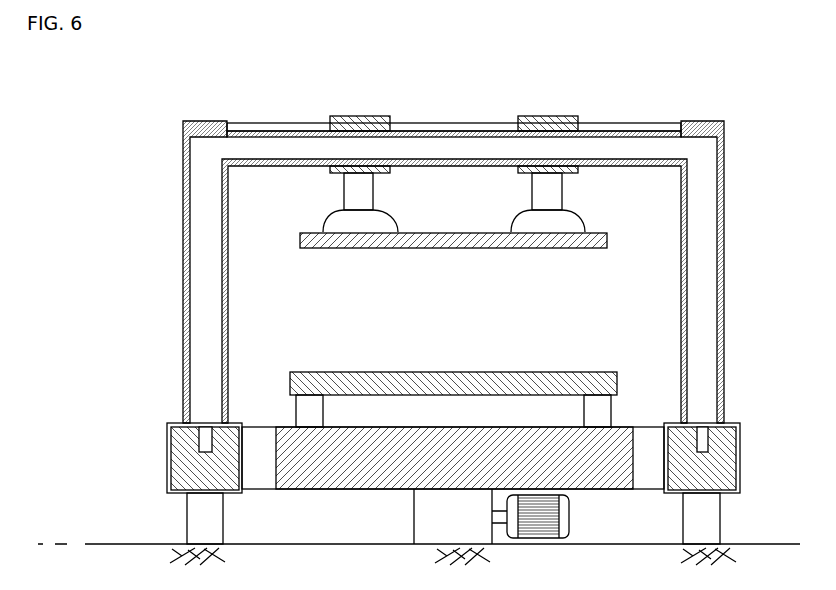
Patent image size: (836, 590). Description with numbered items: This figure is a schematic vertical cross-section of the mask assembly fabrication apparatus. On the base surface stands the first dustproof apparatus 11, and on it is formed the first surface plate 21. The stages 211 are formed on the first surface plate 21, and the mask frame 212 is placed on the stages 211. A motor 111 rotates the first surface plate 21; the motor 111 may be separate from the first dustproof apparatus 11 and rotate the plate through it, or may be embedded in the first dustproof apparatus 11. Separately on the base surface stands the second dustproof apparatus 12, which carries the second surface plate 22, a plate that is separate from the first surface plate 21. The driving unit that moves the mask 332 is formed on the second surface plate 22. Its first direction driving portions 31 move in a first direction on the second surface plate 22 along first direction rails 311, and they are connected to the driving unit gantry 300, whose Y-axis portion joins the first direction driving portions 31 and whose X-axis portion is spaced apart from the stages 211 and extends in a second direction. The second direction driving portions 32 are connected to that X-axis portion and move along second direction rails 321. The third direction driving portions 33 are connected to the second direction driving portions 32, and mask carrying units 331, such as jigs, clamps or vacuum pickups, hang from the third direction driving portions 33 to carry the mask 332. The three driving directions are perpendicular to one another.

The driving unit gantry 300 is at (722, 177).
The second direction rails 321 is at (445, 127).
The second direction driving portions 32 is at (353, 122).
The third direction driving portions 33 is at (358, 195).
The mask carrying units 331 is at (348, 220).
The mask 332 is at (357, 245).
The mask frame 212 is at (503, 377).
The stages 211 is at (593, 412).
The first surface plate 21 is at (328, 470).
The second surface plate 22 is at (197, 465).
The first direction driving portions 31 is at (739, 450).
The first direction rails 311 is at (705, 452).
The first dustproof apparatus 11 is at (425, 513).
The motor 111 is at (552, 518).
The second dustproof apparatus 12 is at (705, 525).